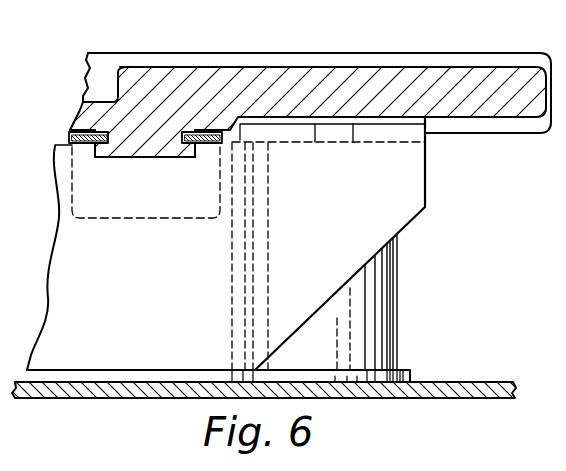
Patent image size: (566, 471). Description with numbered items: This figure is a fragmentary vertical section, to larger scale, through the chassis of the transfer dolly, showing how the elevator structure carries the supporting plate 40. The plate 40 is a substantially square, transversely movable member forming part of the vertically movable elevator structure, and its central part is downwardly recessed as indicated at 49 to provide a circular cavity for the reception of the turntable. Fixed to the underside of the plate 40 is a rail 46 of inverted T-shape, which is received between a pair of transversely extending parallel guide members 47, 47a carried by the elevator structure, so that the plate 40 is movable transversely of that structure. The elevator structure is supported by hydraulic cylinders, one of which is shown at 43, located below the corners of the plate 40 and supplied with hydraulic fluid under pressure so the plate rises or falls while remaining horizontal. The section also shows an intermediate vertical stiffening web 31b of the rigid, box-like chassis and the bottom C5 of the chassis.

The supporting plate 40 is at (476, 78).
The downward recess of the plate 49 is at (105, 65).
The rail of inverted T-shape 46 is at (137, 144).
The guide member 47 is at (92, 148).
The guide member 47a is at (206, 148).
The intermediate vertical stiffening web 31b is at (412, 175).
The hydraulic cylinder 43 is at (381, 296).
The bottom of the chassis C5 is at (448, 386).